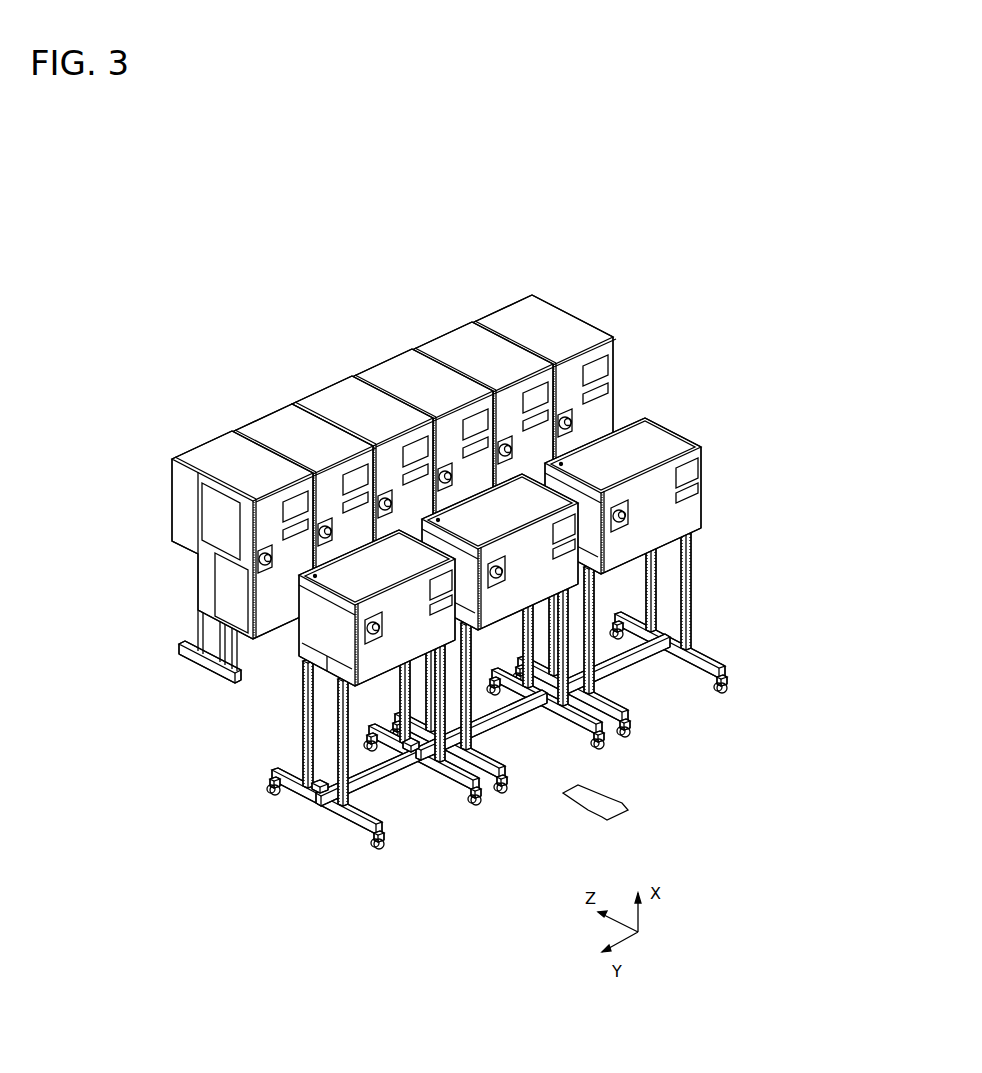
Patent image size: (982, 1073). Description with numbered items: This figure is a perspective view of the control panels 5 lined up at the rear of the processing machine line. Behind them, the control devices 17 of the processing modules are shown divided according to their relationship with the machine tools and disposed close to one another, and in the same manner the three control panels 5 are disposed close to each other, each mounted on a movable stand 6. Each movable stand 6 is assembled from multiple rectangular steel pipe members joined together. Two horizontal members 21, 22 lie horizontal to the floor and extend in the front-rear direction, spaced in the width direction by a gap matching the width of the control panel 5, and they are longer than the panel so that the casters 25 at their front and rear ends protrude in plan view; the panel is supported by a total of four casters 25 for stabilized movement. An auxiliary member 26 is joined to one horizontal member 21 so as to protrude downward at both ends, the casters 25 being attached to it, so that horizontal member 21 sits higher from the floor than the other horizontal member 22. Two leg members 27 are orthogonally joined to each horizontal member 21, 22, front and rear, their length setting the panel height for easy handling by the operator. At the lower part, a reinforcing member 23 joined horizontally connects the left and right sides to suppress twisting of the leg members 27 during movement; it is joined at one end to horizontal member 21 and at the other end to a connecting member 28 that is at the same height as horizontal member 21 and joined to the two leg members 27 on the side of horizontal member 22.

The control device 17 is at (218, 460).
The control panel 5 is at (317, 623).
The movable stand 6 is at (359, 752).
The horizontal member 21 is at (352, 822).
The horizontal member 22 is at (492, 786).
The reinforcing member 23 is at (377, 788).
The caster 25 is at (283, 800).
The auxiliary member 26 is at (275, 790).
The leg member 27 is at (322, 784).
The connecting member 28 is at (428, 767).